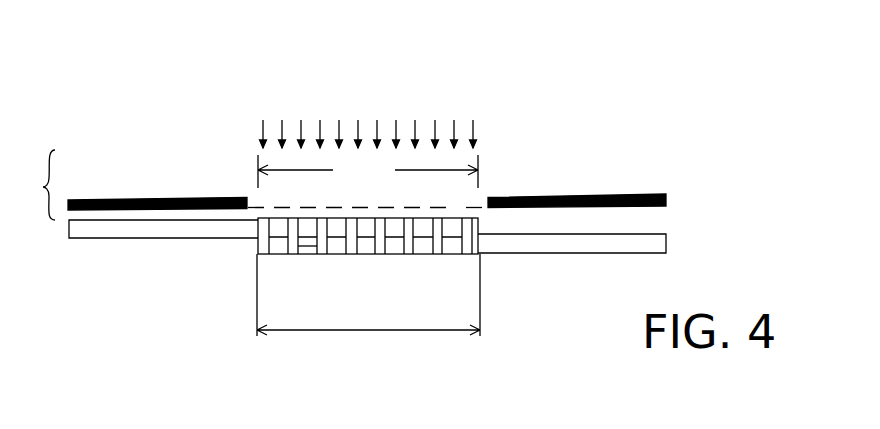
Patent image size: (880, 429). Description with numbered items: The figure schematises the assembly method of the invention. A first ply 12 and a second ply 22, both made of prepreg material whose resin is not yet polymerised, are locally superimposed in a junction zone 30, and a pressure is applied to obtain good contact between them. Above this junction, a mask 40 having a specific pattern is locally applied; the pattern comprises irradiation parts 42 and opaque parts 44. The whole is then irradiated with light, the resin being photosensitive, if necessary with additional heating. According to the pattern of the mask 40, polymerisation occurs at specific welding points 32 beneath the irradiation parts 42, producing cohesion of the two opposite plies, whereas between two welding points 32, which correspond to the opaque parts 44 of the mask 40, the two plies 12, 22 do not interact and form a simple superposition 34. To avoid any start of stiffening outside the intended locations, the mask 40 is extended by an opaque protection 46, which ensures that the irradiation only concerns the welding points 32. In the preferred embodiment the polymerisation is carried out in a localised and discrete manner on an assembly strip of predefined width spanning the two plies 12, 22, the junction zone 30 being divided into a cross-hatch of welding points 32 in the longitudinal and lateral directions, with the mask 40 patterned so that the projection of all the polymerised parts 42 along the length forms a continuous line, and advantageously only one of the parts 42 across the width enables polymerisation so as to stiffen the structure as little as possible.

The first ply 12 is at (88, 231).
The second ply 22 is at (558, 244).
The junction zone 30 is at (368, 293).
The welding points 32 is at (262, 251).
The simple superposition 34 is at (312, 255).
The mask 40 is at (246, 170).
The irradiation parts 42 is at (445, 207).
The opaque parts 44 is at (462, 207).
The opaque protection 46 is at (587, 195).